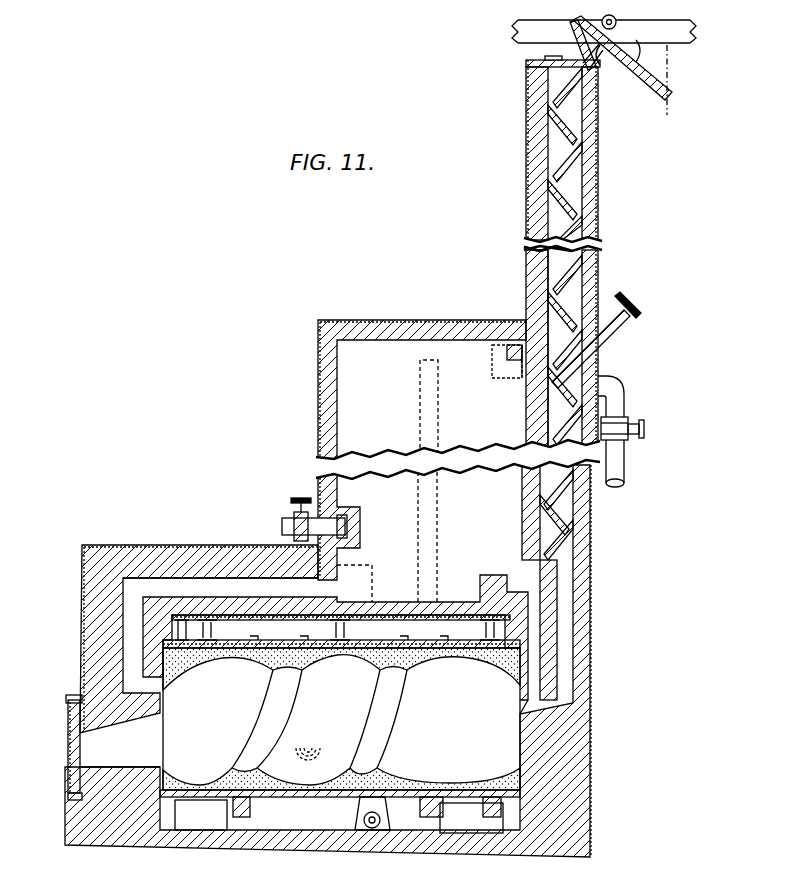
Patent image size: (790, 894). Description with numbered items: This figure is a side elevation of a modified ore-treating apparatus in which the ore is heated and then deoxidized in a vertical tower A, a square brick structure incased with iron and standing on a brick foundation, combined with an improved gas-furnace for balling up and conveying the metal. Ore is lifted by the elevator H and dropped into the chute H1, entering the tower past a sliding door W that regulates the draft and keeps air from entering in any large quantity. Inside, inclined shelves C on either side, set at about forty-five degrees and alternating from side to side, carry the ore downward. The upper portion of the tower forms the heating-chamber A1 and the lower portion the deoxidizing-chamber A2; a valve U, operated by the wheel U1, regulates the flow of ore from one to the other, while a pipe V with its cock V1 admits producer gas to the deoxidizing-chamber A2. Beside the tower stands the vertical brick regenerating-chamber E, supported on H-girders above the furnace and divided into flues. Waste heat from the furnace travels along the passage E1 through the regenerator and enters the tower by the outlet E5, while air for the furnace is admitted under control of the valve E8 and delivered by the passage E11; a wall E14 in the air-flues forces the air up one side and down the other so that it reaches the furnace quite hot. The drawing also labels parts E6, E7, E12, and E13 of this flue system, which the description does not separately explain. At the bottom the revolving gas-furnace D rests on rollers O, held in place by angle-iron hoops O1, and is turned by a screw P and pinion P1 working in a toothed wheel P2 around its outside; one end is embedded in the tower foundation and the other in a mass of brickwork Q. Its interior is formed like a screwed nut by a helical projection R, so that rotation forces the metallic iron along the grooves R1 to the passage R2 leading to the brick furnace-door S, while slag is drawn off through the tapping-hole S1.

The vertical tower A is at (526, 190).
The heating-chamber A1 is at (598, 280).
The deoxidizing-chamber A2 is at (591, 535).
The shelves C is at (526, 291).
The sliding door W is at (528, 63).
The elevator H is at (658, 88).
The chute H1 is at (598, 60).
The valve U is at (600, 353).
The wheel U1 is at (636, 312).
The gas pipe V is at (622, 471).
The cock V1 is at (644, 427).
The regenerating-chamber E is at (422, 450).
The waste-heat passage E1 is at (166, 702).
The outlet E5 is at (506, 374).
The damper plate E6 is at (507, 352).
The damper opening E7 is at (372, 588).
The air valve E8 is at (293, 527).
The air passage E11 is at (527, 692).
The outlet passage E12 is at (507, 575).
The partition E13 is at (356, 515).
The wall E14 is at (424, 414).
The helical projection R is at (319, 722).
The grooves R1 is at (309, 724).
The passage R2 is at (199, 656).
The revolving gas-furnace D is at (341, 719).
The furnace-door S is at (68, 758).
The tapping-hole S1 is at (322, 757).
The brickwork mass Q is at (72, 797).
The rollers O is at (339, 819).
The angle-iron hoops O1 is at (236, 804).
The screw P is at (368, 816).
The pinion P1 is at (363, 821).
The toothed wheel P2 is at (381, 818).